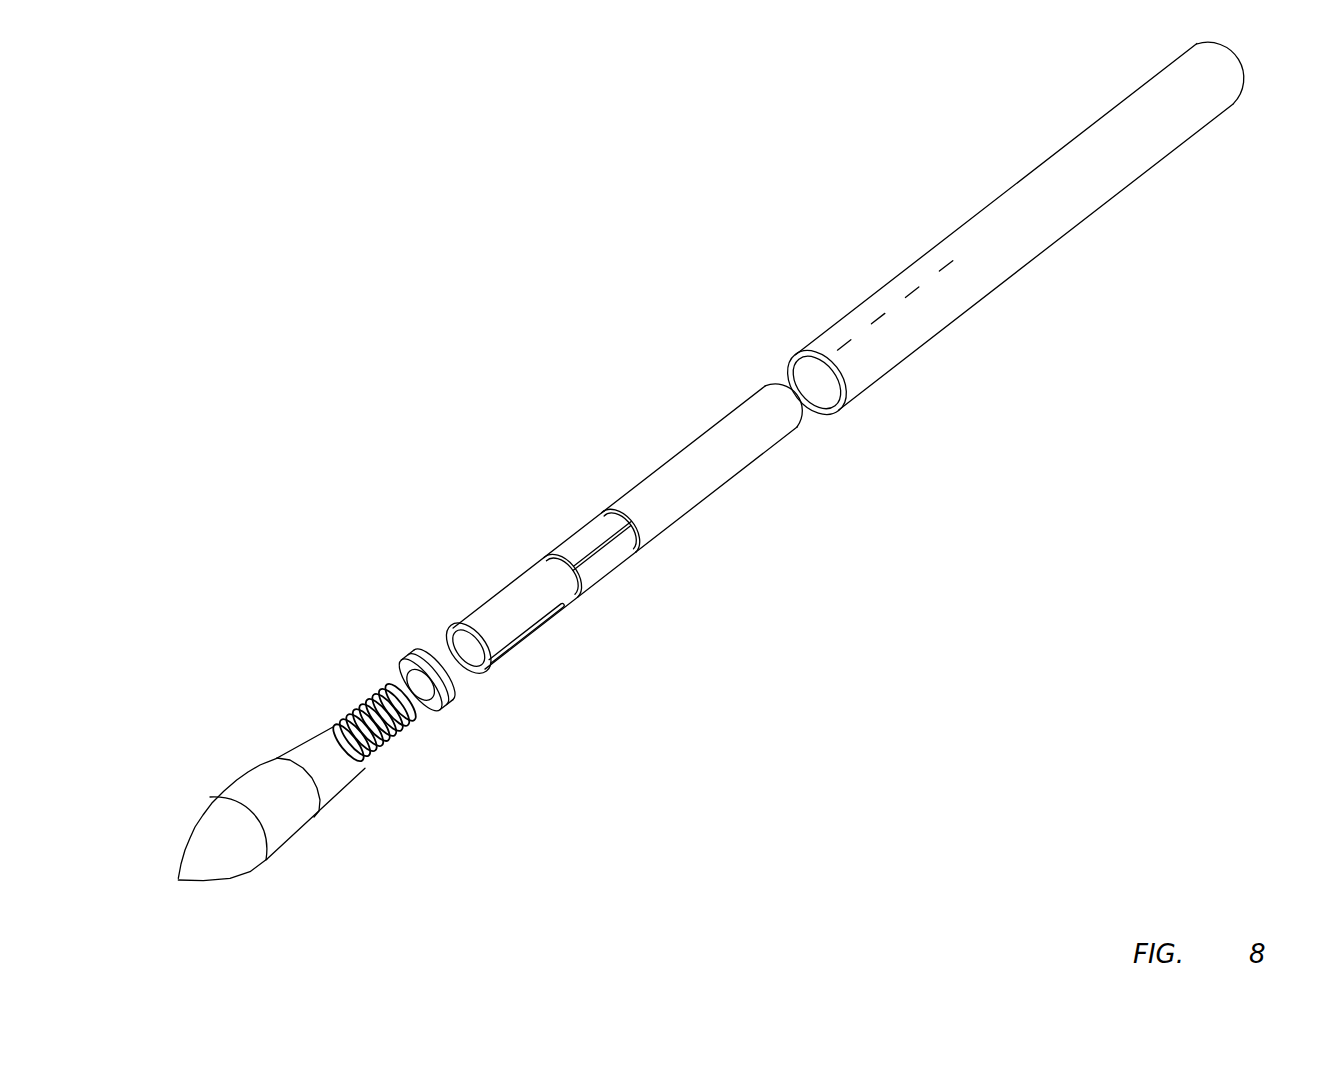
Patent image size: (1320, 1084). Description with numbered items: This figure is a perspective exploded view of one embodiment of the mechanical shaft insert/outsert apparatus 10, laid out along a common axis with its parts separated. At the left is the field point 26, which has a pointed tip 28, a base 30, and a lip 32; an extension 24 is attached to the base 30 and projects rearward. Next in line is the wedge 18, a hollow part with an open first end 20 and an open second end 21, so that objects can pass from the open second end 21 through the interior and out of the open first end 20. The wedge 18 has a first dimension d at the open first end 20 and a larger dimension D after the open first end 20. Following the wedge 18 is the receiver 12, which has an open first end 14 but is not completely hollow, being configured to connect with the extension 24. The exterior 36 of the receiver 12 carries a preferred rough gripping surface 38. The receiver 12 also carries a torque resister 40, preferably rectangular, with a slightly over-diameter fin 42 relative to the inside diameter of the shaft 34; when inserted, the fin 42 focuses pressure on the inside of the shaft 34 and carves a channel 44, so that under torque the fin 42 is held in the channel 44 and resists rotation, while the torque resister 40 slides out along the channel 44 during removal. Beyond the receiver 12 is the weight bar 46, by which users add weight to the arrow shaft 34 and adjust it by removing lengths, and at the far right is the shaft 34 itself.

The mechanical shaft insert/outsert apparatus 10 is at (712, 640).
The receiver 12 is at (505, 596).
The open first end 14 is at (482, 691).
The wedge 18 is at (421, 644).
The open first end 20 is at (432, 641).
The open second end 21 is at (428, 718).
The extension 24 is at (381, 752).
The field point 26 is at (294, 848).
The tip 28 is at (176, 876).
The base 30 is at (288, 747).
The lip 32 is at (333, 722).
The shaft 34 is at (964, 316).
The exterior 36 is at (592, 609).
The gripping surface 38 is at (522, 617).
The torque resister 40 is at (598, 528).
The fin 42 is at (557, 540).
The channel 44 is at (835, 339).
The weight bar 46 is at (764, 460).
The first dimension d is at (427, 636).
The larger dimension D is at (436, 718).